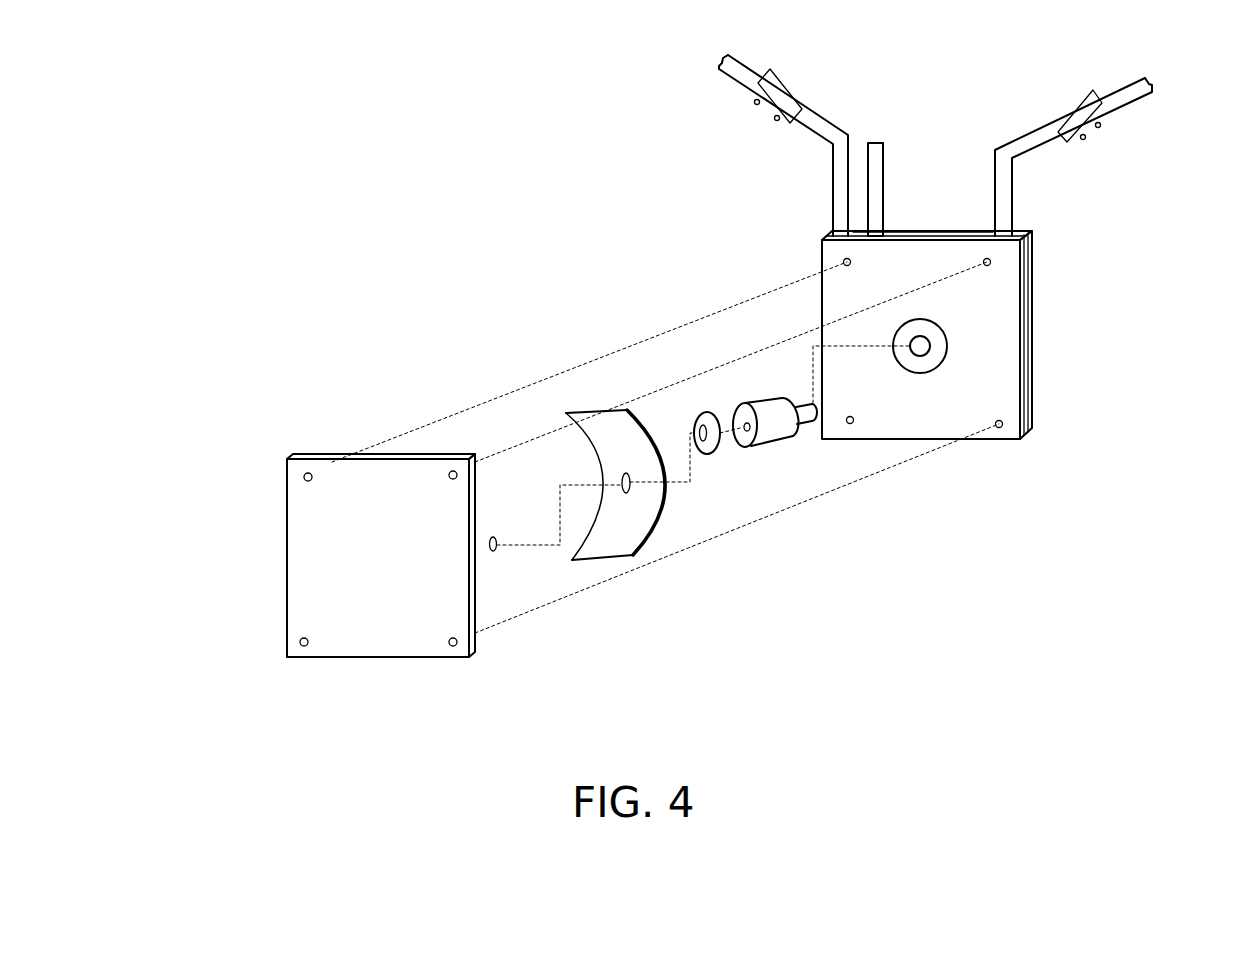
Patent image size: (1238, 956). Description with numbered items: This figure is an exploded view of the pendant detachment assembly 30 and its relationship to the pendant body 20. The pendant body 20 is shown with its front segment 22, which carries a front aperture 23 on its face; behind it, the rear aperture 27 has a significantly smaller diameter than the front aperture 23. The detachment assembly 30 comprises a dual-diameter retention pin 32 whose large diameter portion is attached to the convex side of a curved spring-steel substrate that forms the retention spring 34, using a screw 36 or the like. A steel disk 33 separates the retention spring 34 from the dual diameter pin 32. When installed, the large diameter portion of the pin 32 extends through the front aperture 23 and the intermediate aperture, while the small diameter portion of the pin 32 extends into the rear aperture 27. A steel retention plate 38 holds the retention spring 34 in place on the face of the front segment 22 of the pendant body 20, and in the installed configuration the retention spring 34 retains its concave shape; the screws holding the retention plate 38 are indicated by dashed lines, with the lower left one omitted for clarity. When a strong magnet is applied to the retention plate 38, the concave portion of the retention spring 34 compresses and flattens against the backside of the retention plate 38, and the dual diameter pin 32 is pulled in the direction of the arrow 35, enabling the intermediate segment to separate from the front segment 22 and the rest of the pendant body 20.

The pendant body 20 is at (1072, 267).
The front segment 22 is at (985, 380).
The front aperture 23 is at (922, 368).
The rear aperture 27 is at (930, 347).
The pendant detachment assembly 30 is at (420, 208).
The dual-diameter retention pin 32 is at (762, 447).
The steel disk 33 is at (707, 455).
The retention spring 34 is at (633, 557).
The arrow 35 is at (585, 334).
The screw 36 is at (498, 548).
The steel retention plate 38 is at (287, 575).